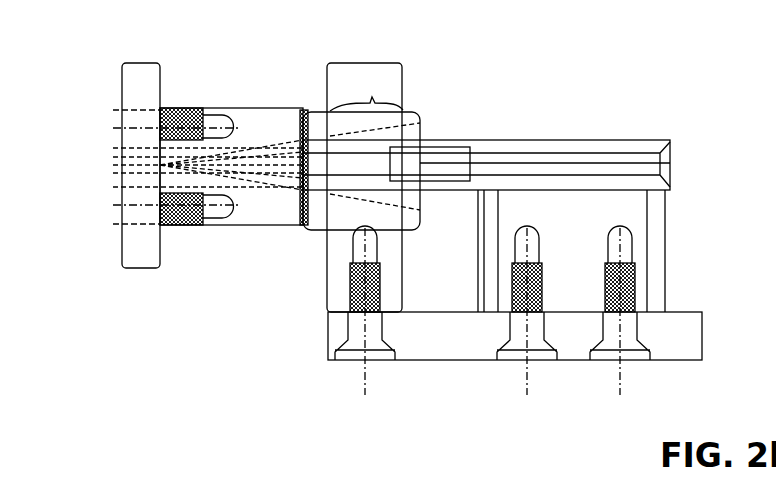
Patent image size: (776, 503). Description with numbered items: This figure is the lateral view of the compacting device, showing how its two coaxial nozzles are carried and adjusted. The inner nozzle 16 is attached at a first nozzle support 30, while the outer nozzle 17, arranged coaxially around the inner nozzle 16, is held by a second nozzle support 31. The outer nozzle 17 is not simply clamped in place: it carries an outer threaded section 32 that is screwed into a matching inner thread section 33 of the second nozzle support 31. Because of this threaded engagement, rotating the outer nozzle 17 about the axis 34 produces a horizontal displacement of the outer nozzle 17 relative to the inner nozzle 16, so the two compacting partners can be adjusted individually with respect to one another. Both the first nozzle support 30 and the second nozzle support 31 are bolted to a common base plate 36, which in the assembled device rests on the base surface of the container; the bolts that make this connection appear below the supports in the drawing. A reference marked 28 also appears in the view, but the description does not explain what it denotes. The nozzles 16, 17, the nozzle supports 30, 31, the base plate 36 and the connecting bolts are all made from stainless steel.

The light source 28 is at (160, 164).
The outer nozzle 17 is at (230, 226).
The inner nozzle 16 is at (305, 171).
The inner thread section 33 is at (372, 97).
The second nozzle support 31 is at (327, 253).
The axis 34 is at (520, 167).
The base plate 36 is at (425, 343).
The outer threaded section 32 is at (370, 232).
The first nozzle support 30 is at (575, 275).